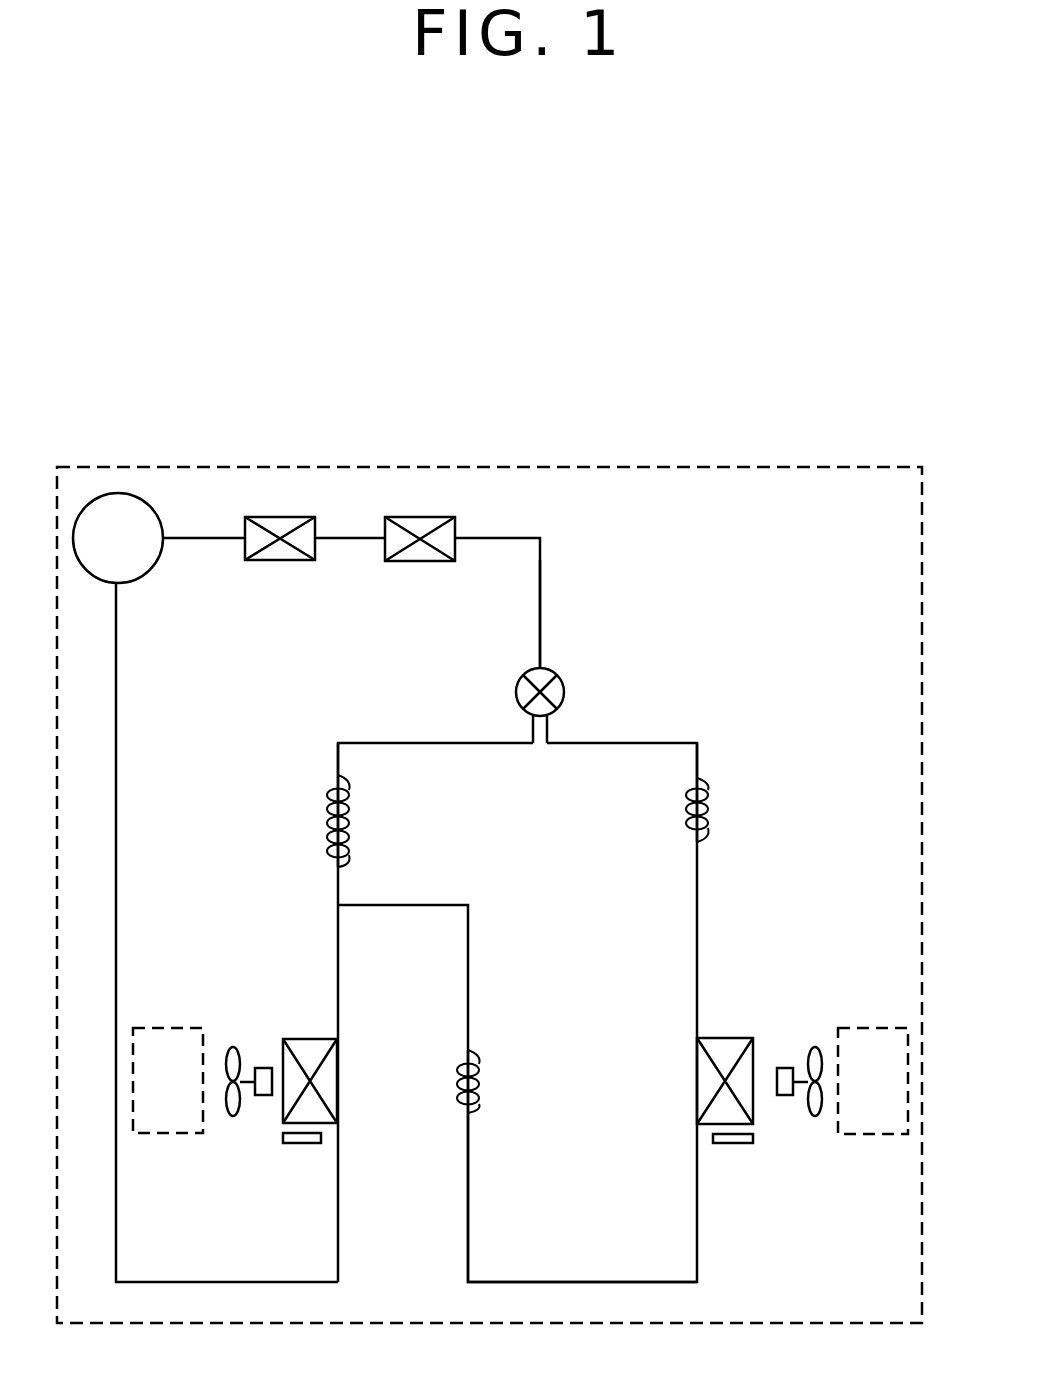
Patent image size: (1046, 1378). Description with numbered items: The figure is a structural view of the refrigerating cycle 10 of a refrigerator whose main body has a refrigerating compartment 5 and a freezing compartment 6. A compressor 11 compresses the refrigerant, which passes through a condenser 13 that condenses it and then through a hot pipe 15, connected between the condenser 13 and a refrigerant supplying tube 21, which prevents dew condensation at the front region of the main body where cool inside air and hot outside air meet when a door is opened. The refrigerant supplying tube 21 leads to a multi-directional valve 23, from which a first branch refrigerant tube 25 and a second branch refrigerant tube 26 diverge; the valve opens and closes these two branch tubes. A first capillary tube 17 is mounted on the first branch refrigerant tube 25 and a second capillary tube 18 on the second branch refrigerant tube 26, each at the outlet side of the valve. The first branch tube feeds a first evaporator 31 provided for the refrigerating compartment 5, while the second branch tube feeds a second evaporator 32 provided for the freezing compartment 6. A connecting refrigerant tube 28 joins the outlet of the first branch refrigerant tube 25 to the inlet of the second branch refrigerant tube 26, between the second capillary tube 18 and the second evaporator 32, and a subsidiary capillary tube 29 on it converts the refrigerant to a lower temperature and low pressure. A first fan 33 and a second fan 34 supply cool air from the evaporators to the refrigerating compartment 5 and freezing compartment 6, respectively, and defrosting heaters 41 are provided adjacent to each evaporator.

The refrigerating cycle 10 is at (745, 467).
The compressor 11 is at (155, 563).
The condenser 13 is at (290, 561).
The hot pipe 15 is at (425, 562).
The refrigerant supplying tube 21 is at (541, 572).
The multi-directional valve 23 is at (557, 678).
The first branch refrigerant tube 25 is at (615, 744).
The second branch refrigerant tube 26 is at (437, 744).
The first capillary tube 17 is at (708, 808).
The second capillary tube 18 is at (327, 812).
The subsidiary capillary tube 29 is at (479, 1052).
The connecting refrigerant tube 28 is at (469, 1215).
The first evaporator 31 is at (696, 1064).
The second evaporator 32 is at (338, 1063).
The first fan 33 is at (814, 1046).
The second fan 34 is at (233, 1046).
The defrosting heater 41 is at (322, 1137).
The refrigerating compartment 5 is at (874, 1135).
The freezing compartment 6 is at (169, 1135).